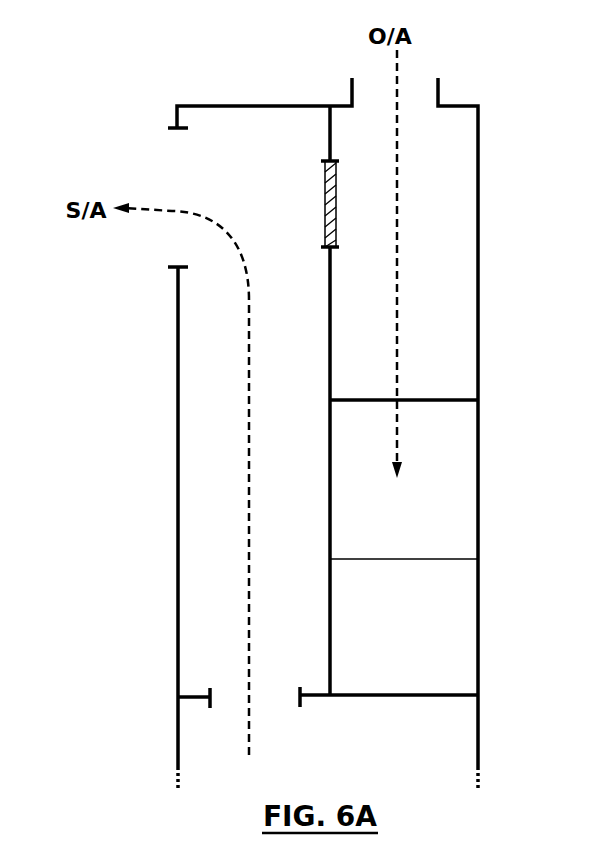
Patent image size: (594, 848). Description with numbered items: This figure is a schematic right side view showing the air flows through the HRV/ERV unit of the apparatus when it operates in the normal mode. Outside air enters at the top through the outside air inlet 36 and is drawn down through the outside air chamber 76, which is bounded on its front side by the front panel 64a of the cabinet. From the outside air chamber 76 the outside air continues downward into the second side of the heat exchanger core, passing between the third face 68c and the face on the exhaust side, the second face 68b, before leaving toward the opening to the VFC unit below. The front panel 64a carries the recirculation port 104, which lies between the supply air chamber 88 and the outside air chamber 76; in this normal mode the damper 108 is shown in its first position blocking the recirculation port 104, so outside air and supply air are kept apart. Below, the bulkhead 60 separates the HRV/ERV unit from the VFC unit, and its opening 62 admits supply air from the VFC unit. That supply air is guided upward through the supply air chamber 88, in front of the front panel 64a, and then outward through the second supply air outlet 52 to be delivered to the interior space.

The outside air inlet 36 is at (441, 91).
The second supply air outlet 52 is at (176, 271).
The bulkhead 60 is at (370, 700).
The opening 62 is at (305, 700).
The front panel 64a is at (328, 318).
The second face 68b is at (383, 639).
The third face 68c is at (383, 507).
The outside air chamber 76 is at (446, 326).
The supply air chamber 88 is at (212, 371).
The recirculation port 104 is at (333, 250).
The damper 108 is at (337, 201).